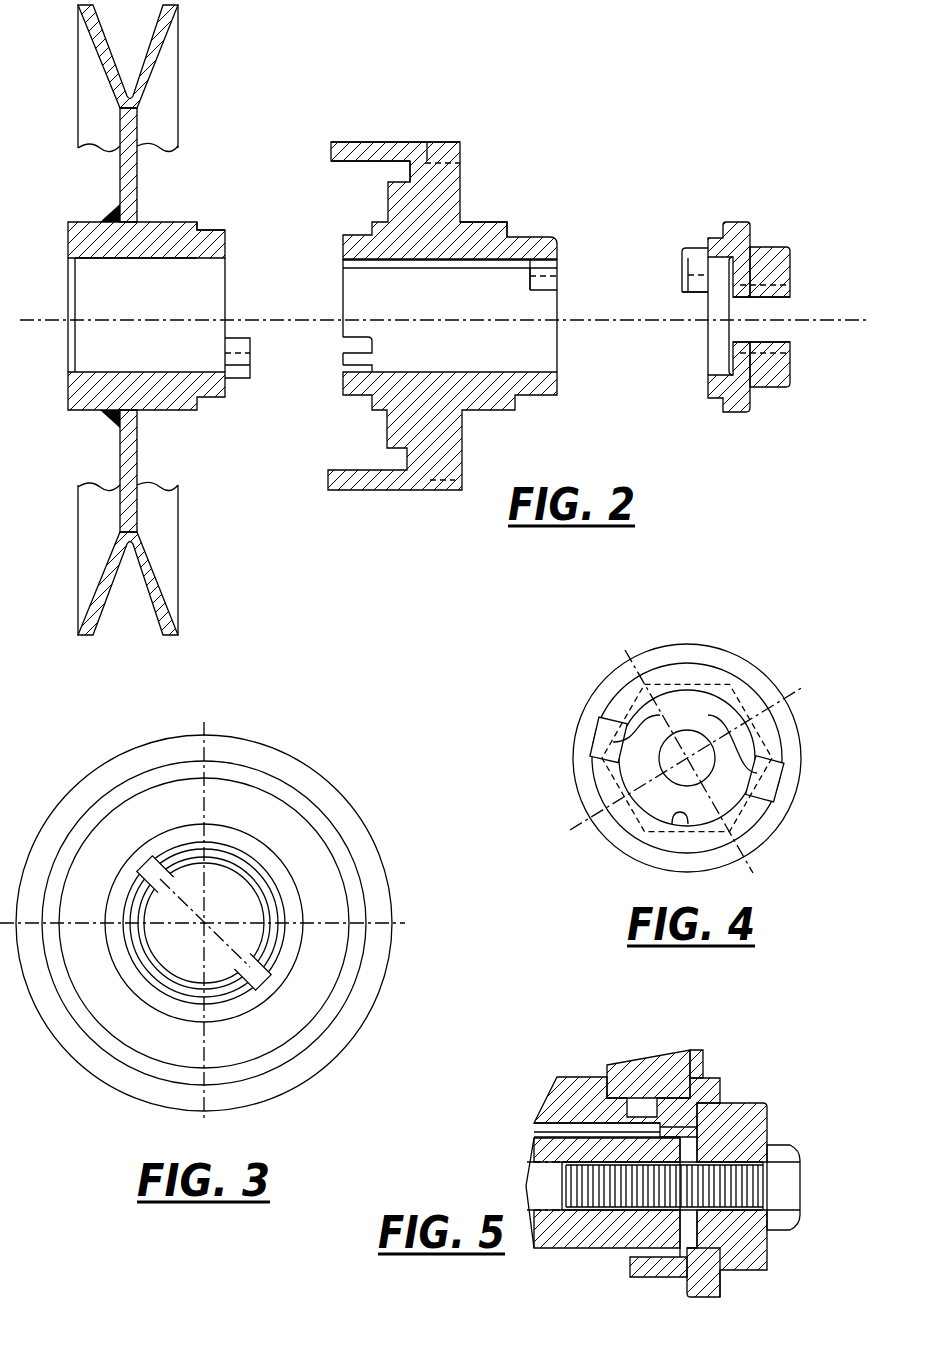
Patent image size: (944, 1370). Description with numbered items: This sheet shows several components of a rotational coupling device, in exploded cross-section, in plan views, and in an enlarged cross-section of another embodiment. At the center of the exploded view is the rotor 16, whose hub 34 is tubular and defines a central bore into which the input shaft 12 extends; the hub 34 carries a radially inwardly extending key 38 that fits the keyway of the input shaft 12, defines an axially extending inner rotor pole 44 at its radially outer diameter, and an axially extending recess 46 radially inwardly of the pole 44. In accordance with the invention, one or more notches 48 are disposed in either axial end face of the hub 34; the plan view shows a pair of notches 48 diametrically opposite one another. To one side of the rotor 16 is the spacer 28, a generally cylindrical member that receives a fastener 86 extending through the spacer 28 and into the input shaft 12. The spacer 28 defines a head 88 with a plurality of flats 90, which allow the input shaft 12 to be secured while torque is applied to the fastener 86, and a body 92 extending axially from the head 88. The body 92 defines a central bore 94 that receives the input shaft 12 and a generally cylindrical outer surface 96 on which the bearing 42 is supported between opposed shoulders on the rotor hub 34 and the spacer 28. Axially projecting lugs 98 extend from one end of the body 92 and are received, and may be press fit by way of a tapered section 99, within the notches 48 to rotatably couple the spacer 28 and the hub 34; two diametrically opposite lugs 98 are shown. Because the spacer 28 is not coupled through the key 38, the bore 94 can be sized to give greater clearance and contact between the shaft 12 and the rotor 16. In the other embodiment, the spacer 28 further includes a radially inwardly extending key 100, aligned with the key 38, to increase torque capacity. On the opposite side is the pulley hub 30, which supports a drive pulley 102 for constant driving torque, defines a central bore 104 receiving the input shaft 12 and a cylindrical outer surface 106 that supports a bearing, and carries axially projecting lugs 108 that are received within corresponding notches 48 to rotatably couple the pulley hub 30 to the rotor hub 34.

In FIG. 5, the input shaft 12 is at (617, 1235).
In FIG. 2, the rotor 16 is at (580, 148).
In FIG. 3, the rotor 16 is at (217, 898).
In FIG. 2, the spacer 28 is at (748, 296).
In FIG. 4, the spacer 28 is at (710, 745).
In FIG. 5, the spacer 28 is at (770, 1179).
In FIG. 2, the pulley hub 30 is at (222, 215).
In FIG. 2, the hub 34 is at (508, 226).
In FIG. 3, the hub 34 is at (305, 1003).
In FIG. 5, the hub 34 is at (583, 1097).
In FIG. 5, the key 38 is at (580, 1130).
In FIG. 5, the bearing 42 is at (660, 1060).
In FIG. 2, the inner rotor pole 44 is at (370, 147).
In FIG. 3, the inner rotor pole 44 is at (305, 780).
In FIG. 2, the recess 46 is at (410, 163).
In FIG. 3, the recess 46 is at (333, 828).
In FIG. 2, the notches 48 is at (528, 291).
In FIG. 3, the notches 48 is at (258, 964).
In FIG. 5, the fastener 86 is at (775, 1218).
In FIG. 2, the head 88 is at (785, 380).
In FIG. 5, the head 88 is at (757, 1262).
In FIG. 4, the flats 90 is at (748, 712).
In FIG. 2, the body 92 is at (745, 405).
In FIG. 4, the body 92 is at (750, 846).
In FIG. 5, the body 92 is at (710, 1285).
In FIG. 2, the central bore 94 is at (715, 385).
In FIG. 4, the central bore 94 is at (675, 815).
In FIG. 5, the central bore 94 is at (683, 1250).
In FIG. 2, the outer surface 96 is at (713, 228).
In FIG. 4, the outer surface 96 is at (760, 820).
In FIG. 2, the lugs 98 is at (686, 256).
In FIG. 4, the lugs 98 is at (685, 763).
In FIG. 2, the tapered section 99 is at (682, 288).
In FIG. 5, the key 100 is at (682, 1127).
In FIG. 2, the drive pulley 102 is at (162, 108).
In FIG. 2, the central bore 104 is at (155, 270).
In FIG. 2, the outer surface 106 is at (216, 232).
In FIG. 2, the lugs 108 is at (248, 372).